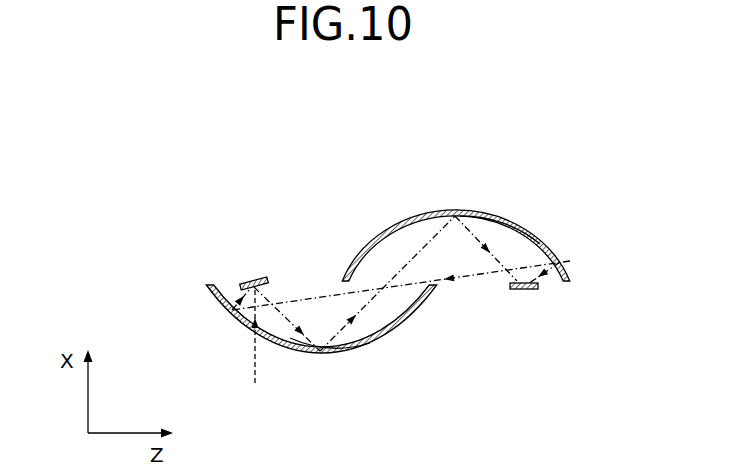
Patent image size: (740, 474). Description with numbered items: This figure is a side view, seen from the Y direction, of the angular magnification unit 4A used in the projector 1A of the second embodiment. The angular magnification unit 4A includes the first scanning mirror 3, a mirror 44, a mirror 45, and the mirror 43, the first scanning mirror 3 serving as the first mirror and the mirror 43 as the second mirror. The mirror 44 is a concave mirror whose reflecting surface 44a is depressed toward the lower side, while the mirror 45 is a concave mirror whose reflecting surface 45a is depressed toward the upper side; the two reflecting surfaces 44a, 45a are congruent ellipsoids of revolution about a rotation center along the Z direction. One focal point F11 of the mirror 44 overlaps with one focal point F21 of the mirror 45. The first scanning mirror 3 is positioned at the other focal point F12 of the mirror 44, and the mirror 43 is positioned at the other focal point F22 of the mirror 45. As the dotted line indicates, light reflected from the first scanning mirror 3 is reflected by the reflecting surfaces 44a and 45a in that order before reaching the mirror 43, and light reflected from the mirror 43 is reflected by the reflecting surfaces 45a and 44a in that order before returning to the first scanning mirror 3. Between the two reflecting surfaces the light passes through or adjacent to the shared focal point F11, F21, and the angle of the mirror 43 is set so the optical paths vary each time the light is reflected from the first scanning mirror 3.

The angular magnification unit 4A is at (382, 265).
The projector 1A is at (425, 118).
The first scanning mirror 3 is at (247, 278).
The mirror 43 is at (532, 290).
The mirror 44 is at (237, 316).
The reflecting surface 44a is at (373, 346).
The mirror 45 is at (537, 236).
The reflecting surface 45a is at (512, 226).
The focal point F11 is at (401, 315).
The focal point F21 is at (401, 323).
The focal point F12 is at (255, 278).
The focal point F22 is at (523, 290).